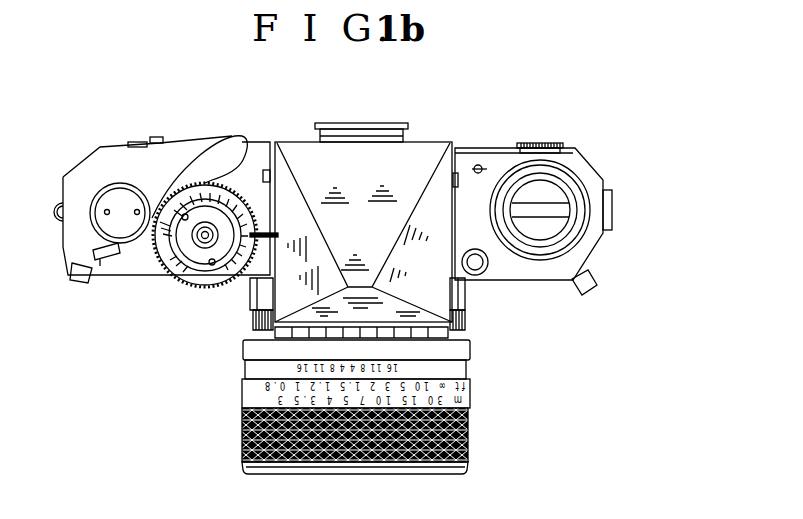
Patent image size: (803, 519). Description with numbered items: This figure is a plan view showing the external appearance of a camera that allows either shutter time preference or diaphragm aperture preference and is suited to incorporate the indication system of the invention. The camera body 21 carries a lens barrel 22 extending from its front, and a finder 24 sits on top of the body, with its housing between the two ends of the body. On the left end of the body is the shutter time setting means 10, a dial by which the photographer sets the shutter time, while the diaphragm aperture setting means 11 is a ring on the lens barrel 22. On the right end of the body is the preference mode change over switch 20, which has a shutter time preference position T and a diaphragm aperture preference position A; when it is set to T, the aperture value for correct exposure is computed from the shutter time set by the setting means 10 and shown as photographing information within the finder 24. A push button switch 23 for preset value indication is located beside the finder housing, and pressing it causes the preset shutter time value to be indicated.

The shutter time setting means 10 is at (237, 190).
The diaphragm aperture setting means 11 is at (460, 352).
The preference mode change over switch 20 is at (553, 145).
The camera body 21 is at (587, 247).
The lens barrel 22 is at (468, 435).
The push button switch for preset value indication 23 is at (480, 275).
The finder 24 is at (365, 123).